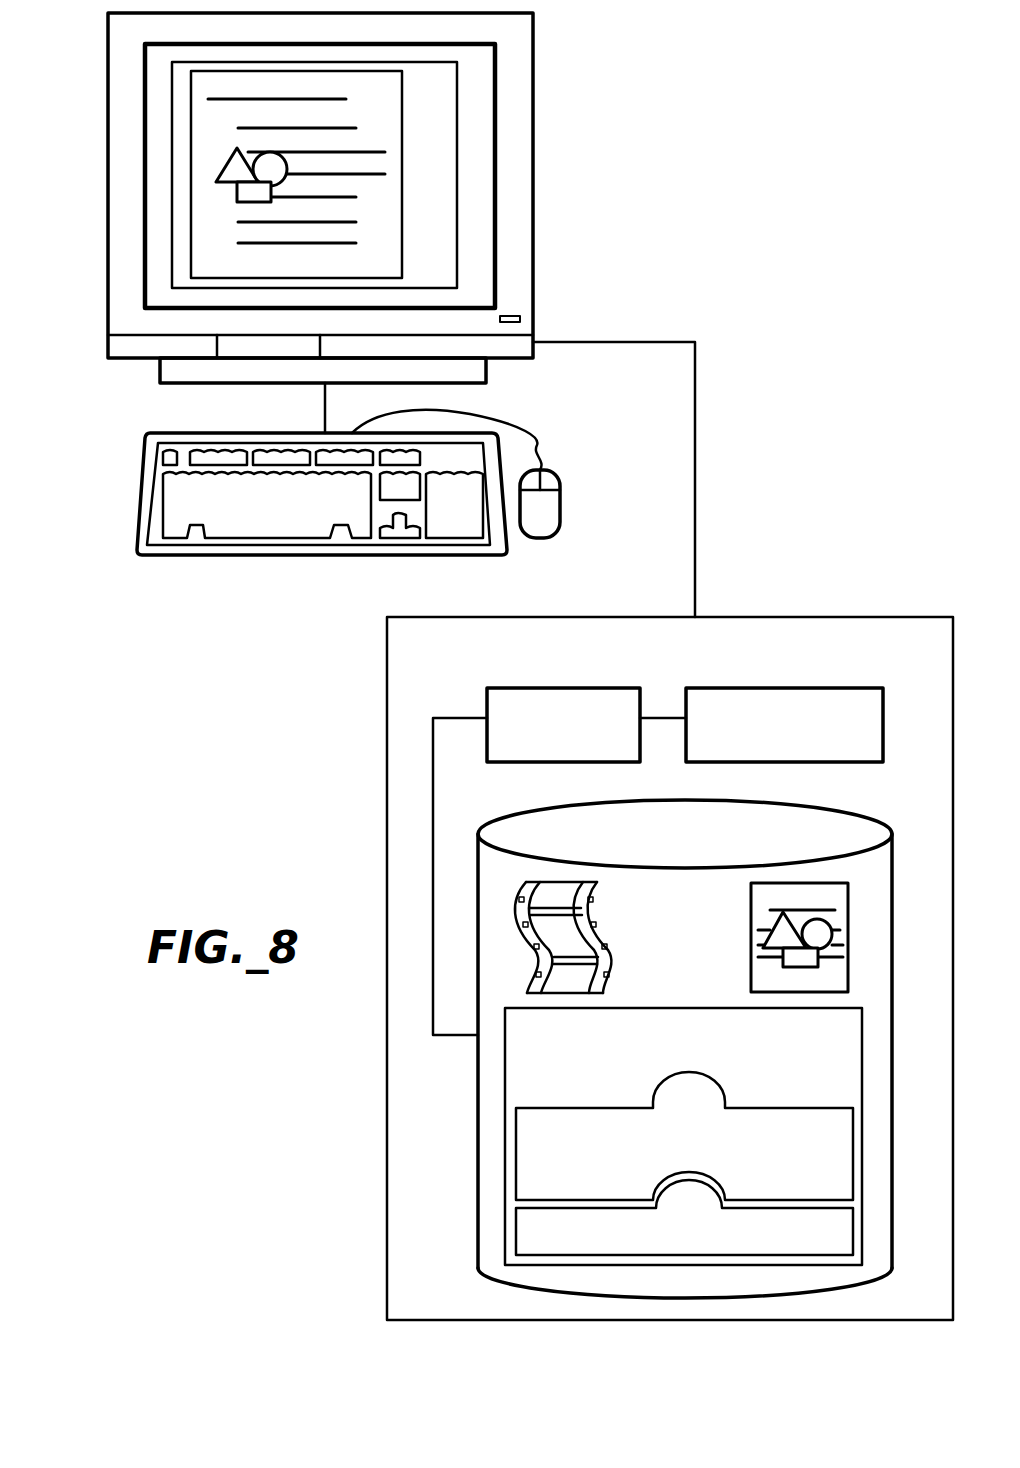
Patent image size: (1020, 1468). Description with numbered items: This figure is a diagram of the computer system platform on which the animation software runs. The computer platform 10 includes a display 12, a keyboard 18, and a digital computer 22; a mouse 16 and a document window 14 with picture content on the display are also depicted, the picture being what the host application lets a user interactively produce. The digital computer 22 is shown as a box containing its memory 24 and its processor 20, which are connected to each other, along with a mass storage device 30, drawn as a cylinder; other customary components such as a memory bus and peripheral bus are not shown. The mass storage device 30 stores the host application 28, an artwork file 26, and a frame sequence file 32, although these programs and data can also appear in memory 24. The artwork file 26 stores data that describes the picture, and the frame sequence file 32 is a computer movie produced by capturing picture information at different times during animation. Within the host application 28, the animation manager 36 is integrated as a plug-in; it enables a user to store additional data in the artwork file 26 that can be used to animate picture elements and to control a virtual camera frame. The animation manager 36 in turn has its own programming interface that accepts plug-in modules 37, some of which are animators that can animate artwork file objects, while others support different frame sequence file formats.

The computer platform 10 is at (401, 312).
The display 12 is at (457, 135).
The document window 14 is at (370, 225).
The mouse 16 is at (548, 480).
The keyboard 18 is at (258, 555).
The processor 20 is at (808, 688).
The digital computer 22 is at (635, 968).
The memory 24 is at (580, 688).
The artwork file 26 is at (751, 938).
The host application 28 is at (507, 1083).
The mass storage device 30 is at (845, 808).
The frame sequence file 32 is at (598, 932).
The animation manager 36 is at (516, 1137).
The plug-in modules 37 is at (516, 1218).